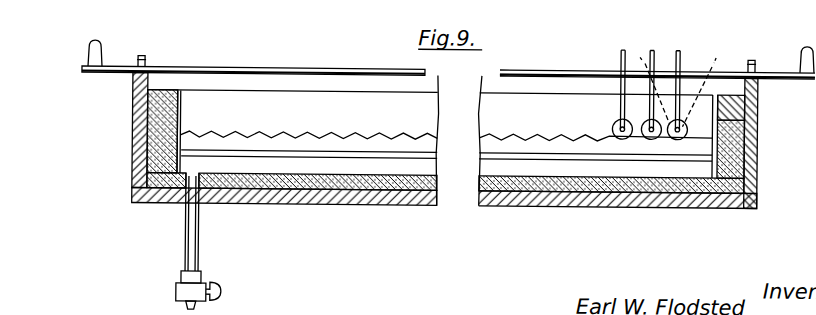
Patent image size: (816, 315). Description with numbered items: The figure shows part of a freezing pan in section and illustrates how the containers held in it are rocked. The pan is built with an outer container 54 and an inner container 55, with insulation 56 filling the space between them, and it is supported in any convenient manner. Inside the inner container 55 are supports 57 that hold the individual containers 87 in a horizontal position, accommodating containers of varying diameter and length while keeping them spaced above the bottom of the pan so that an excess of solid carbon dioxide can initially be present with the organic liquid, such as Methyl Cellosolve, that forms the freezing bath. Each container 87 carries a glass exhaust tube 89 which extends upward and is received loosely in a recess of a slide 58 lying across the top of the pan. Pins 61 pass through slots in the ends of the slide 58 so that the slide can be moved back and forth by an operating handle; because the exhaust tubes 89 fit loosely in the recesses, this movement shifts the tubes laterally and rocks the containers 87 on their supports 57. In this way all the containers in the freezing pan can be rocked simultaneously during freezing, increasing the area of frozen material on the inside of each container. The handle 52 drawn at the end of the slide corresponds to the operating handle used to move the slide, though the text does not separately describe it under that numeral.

The handle 52 is at (90, 41).
The outer container 54 is at (752, 147).
The inner container 55 is at (757, 114).
The insulation 56 is at (730, 167).
The supports 57 is at (395, 136).
The slide 58 is at (223, 67).
The pins 61 is at (142, 55).
The container 87 is at (612, 117).
The glass exhaust tube 89 is at (682, 54).